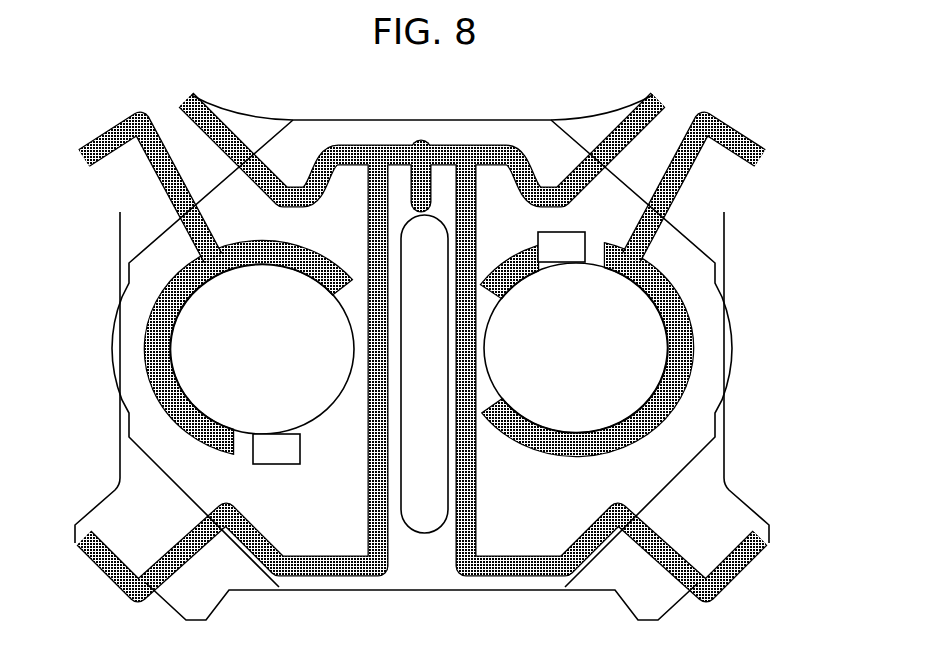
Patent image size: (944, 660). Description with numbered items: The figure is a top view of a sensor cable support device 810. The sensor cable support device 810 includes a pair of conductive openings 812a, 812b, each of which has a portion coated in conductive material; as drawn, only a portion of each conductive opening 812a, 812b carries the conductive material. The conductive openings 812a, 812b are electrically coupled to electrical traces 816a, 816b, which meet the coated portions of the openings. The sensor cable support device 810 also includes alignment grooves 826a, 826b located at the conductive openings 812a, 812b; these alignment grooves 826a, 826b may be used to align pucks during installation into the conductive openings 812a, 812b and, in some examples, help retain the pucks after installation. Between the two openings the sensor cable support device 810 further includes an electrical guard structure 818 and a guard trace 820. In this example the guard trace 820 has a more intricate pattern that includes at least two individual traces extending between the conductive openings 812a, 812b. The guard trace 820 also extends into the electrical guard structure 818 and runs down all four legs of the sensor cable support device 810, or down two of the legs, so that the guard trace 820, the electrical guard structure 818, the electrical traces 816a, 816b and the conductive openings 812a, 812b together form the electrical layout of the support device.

The sensor cable support device 810 is at (778, 105).
The conductive opening 812a is at (652, 332).
The conductive opening 812b is at (193, 358).
The electrical trace 816a is at (752, 156).
The electrical trace 816b is at (110, 148).
The electrical guard structure 818 is at (418, 518).
The guard trace 820 is at (377, 150).
The alignment groove 826a is at (567, 232).
The alignment groove 826b is at (275, 467).